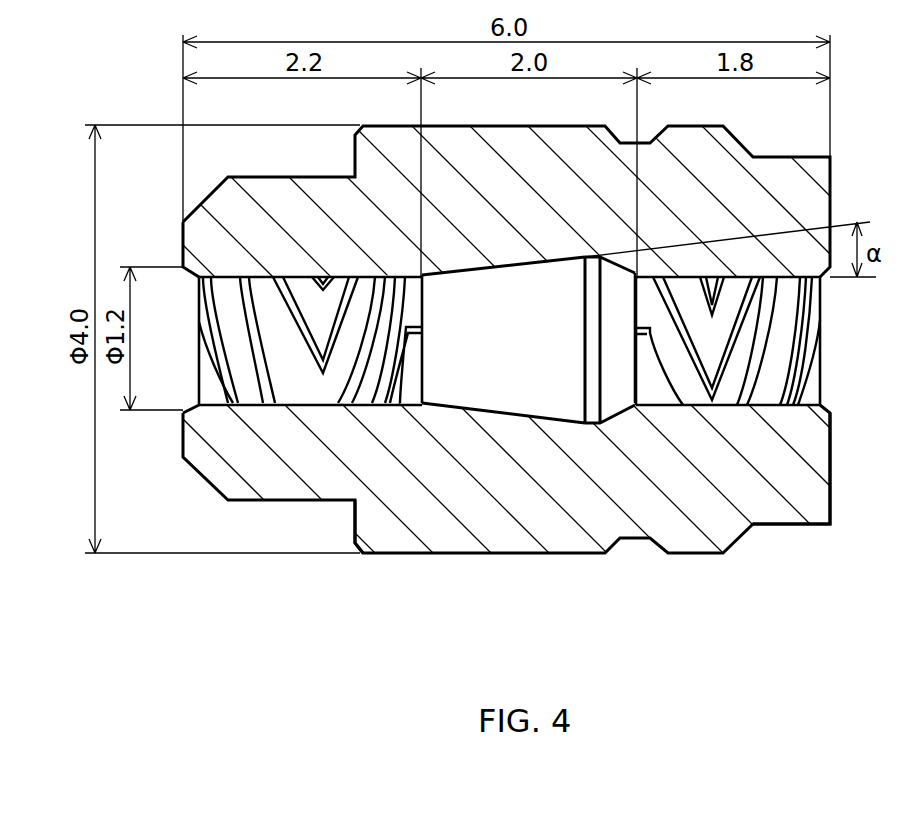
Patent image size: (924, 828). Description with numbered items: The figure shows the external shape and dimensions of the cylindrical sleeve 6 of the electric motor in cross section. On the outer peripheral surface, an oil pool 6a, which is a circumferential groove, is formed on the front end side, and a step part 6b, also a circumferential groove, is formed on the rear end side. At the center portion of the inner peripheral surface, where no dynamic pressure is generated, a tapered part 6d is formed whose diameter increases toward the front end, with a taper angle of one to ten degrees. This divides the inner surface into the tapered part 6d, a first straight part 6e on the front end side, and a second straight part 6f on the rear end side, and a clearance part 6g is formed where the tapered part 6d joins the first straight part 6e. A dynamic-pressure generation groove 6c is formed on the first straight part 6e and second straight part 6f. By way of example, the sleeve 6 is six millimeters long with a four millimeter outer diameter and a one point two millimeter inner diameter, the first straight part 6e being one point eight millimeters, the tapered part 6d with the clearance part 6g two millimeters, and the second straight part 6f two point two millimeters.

The sleeve 6 is at (848, 143).
The oil pool 6a is at (770, 524).
The step part 6b is at (353, 523).
The dynamic-pressure generation groove 6c is at (798, 365).
The tapered part 6d is at (483, 387).
The first straight part 6e is at (655, 400).
The second straight part 6f is at (365, 385).
The clearance part 6g is at (590, 410).